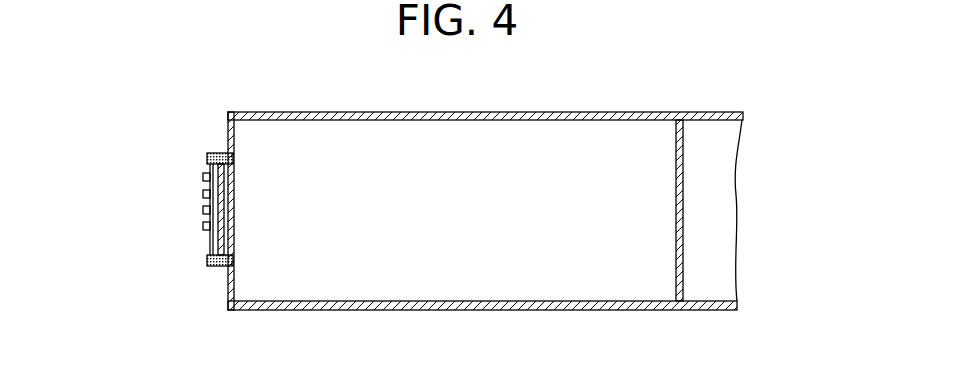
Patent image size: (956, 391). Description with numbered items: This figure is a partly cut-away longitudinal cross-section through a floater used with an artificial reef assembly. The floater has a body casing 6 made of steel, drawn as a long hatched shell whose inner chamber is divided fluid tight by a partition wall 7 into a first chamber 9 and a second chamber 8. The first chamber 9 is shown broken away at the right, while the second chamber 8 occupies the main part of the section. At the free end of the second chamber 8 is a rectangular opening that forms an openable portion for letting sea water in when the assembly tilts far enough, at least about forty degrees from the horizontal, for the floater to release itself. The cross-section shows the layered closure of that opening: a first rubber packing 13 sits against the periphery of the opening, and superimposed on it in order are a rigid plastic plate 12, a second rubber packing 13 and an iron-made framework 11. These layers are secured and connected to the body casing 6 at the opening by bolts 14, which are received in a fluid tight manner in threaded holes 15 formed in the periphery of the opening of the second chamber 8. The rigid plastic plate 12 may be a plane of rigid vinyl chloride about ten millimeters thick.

The body casing 6 is at (566, 112).
The partition wall 7 is at (685, 150).
The second chamber 8 is at (519, 290).
The first chamber 9 is at (728, 194).
The iron-made framework 11 is at (208, 153).
The rigid plastic plate 12 is at (205, 257).
The rubber packing 13 is at (226, 152).
The bolts 14 is at (206, 174).
The threaded holes 15 is at (232, 160).